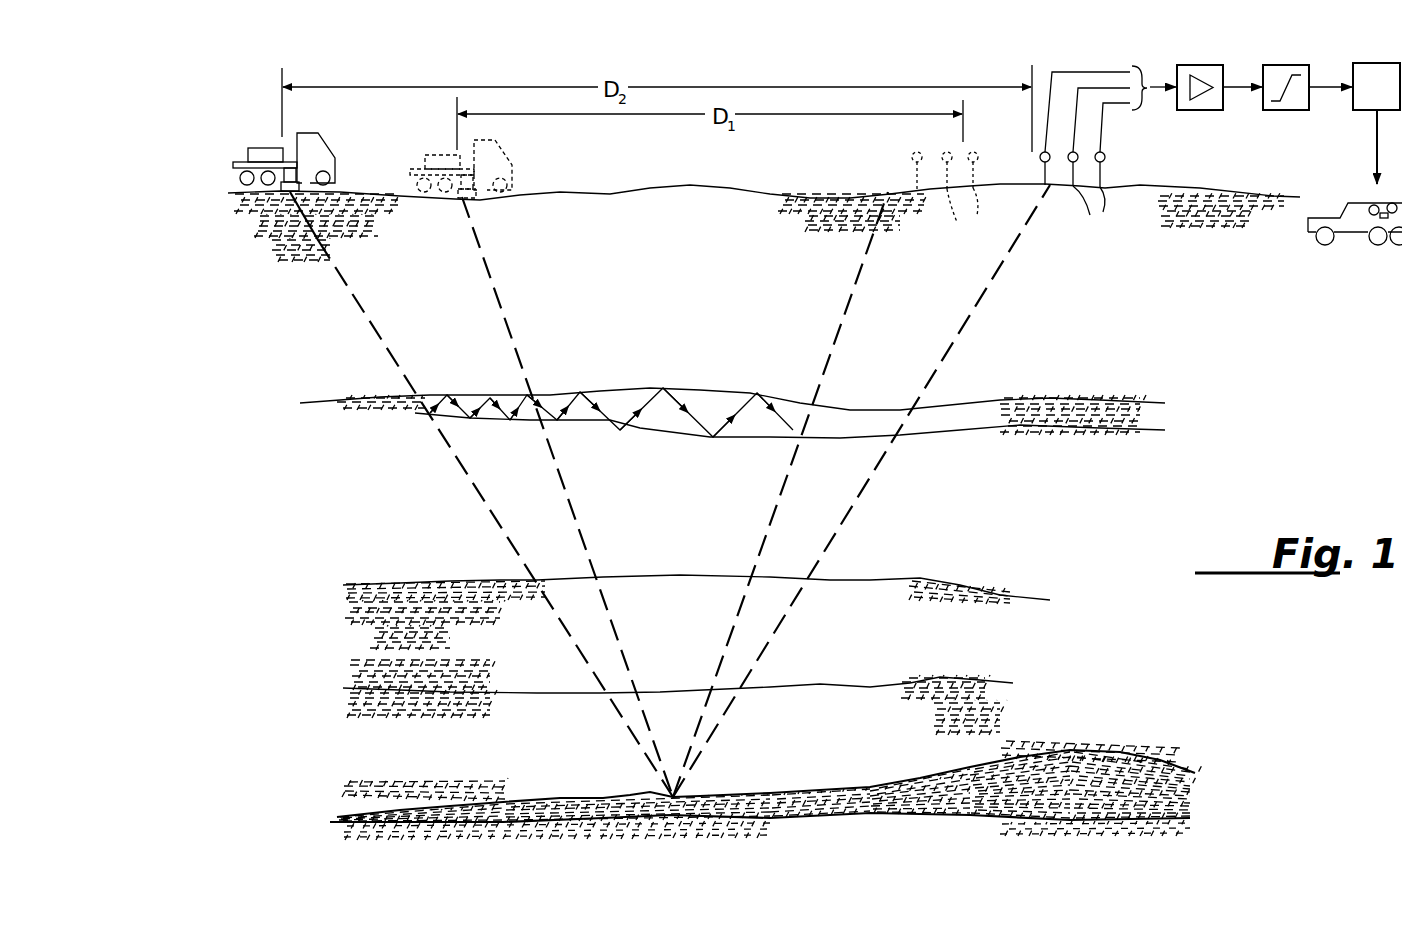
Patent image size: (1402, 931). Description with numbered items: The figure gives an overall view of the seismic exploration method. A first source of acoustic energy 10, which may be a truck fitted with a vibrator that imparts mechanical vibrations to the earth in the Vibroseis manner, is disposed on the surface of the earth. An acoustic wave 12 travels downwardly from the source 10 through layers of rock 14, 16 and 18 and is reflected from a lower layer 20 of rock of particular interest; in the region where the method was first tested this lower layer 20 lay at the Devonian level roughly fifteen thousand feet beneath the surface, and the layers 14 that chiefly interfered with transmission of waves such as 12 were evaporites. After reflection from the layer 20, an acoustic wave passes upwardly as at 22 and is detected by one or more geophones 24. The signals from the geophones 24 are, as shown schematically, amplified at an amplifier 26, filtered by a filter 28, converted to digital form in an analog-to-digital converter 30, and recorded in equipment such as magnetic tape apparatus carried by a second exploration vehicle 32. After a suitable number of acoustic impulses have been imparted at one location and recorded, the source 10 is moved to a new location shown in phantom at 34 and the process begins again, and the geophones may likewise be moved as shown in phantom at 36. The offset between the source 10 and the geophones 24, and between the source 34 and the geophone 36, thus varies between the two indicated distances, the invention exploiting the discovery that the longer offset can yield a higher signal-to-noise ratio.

The source of acoustic energy 10 is at (327, 160).
The acoustic wave 12 is at (372, 333).
The layer of rock 14 is at (340, 401).
The layer of rock 16 is at (370, 612).
The layer of rock 18 is at (355, 708).
The lower layer of rock 20 is at (337, 817).
The upward acoustic wave 22 is at (868, 484).
The geophones 24 is at (1085, 157).
The amplifier 26 is at (1200, 106).
The filter 28 is at (1286, 106).
The analog-to-digital converter 30 is at (1372, 111).
The second exploration vehicle 32 is at (1367, 238).
The source at new location 34 is at (521, 171).
The geophone at new location 36 is at (945, 200).